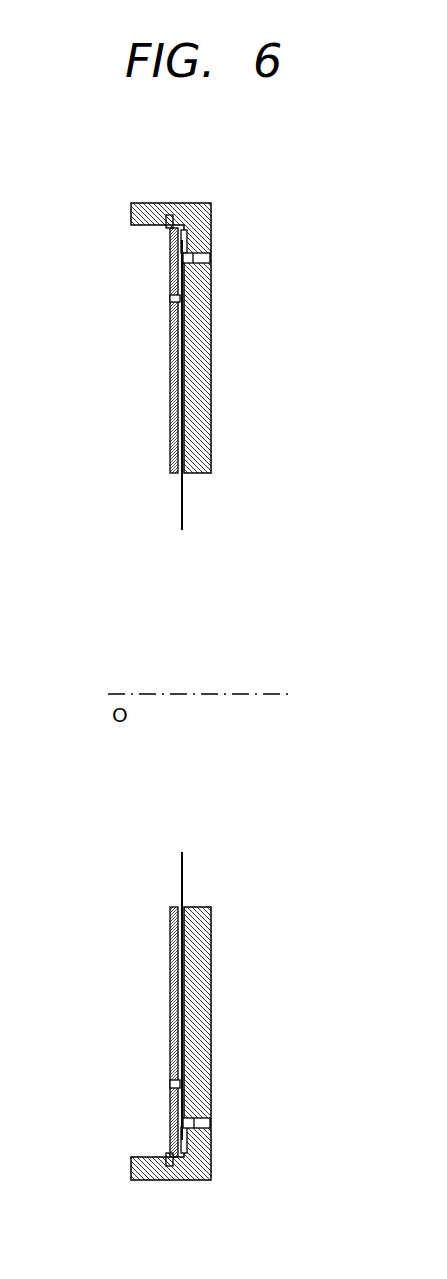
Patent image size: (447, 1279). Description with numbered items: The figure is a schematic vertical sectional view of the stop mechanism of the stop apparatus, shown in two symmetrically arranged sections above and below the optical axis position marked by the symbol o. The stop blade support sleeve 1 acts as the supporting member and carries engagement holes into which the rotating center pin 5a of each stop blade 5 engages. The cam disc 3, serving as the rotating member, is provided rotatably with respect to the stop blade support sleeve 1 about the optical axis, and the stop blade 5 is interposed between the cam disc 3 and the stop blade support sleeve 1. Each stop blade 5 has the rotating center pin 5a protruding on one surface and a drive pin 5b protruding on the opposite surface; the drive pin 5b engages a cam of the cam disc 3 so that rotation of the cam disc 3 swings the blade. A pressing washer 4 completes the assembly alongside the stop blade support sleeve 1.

The stop blade support sleeve 1 is at (205, 373).
The cam disc 3 is at (173, 413).
The pressing washer 4 is at (170, 229).
The stop blade 5 is at (184, 504).
The rotating center pin 5a is at (204, 262).
The drive pin 5b is at (170, 296).